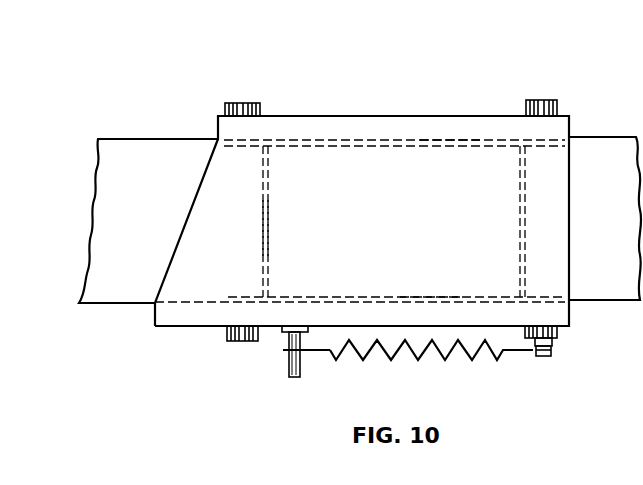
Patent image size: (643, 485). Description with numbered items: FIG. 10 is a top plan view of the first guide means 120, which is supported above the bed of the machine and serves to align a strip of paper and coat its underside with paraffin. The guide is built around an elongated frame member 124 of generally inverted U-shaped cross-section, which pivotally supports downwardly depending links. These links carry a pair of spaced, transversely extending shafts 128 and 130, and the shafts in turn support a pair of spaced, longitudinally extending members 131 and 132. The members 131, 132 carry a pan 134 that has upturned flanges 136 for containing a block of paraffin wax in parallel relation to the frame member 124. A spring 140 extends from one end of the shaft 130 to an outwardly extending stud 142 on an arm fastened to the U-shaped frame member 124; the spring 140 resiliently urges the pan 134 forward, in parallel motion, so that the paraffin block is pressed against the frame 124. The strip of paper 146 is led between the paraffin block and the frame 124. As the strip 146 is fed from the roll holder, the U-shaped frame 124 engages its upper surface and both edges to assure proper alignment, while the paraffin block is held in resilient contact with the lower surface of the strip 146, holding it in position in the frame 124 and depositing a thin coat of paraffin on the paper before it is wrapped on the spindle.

The first guide means 120 is at (354, 105).
The frame member 124 is at (155, 328).
The shaft 128 is at (244, 342).
The shaft 130 is at (562, 330).
The longitudinally extending member 131 is at (435, 295).
The longitudinally extending member 132 is at (446, 148).
The pan 134 is at (478, 243).
The upturned flanges 136 is at (262, 232).
The spring 140 is at (445, 352).
The stud 142 is at (293, 372).
The strip of paper 146 is at (178, 158).